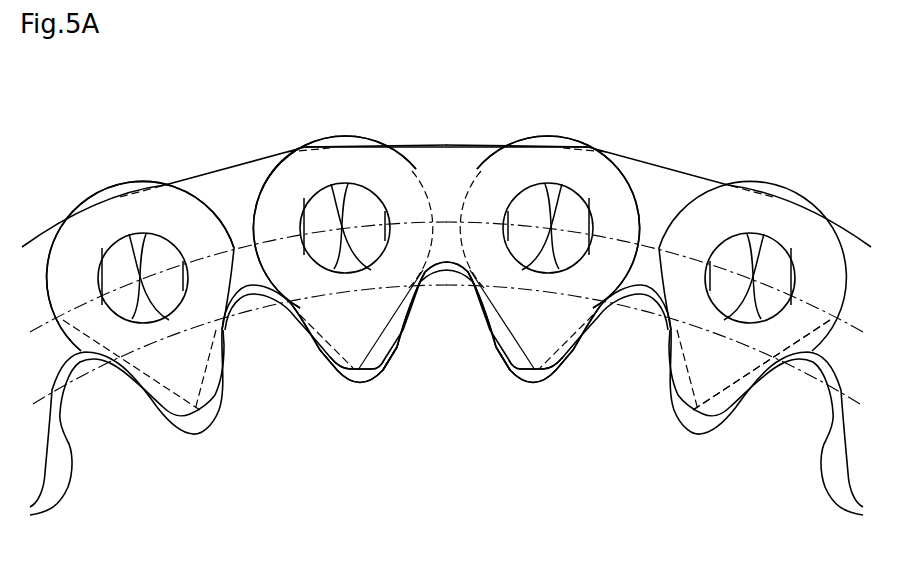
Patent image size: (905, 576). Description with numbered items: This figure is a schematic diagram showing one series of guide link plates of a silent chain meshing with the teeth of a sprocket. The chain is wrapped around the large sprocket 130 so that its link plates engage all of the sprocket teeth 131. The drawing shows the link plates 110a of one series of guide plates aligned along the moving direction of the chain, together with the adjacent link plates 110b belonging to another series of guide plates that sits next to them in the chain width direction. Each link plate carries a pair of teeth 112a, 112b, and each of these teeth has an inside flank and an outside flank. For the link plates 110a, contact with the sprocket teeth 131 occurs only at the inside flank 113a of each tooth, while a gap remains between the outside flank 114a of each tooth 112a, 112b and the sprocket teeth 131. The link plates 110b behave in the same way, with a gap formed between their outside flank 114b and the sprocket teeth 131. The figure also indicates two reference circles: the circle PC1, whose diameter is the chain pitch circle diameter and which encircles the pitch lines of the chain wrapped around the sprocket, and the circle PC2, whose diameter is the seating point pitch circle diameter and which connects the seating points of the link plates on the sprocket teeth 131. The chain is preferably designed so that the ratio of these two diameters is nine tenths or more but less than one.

The large sprocket 130 is at (472, 571).
The sprocket teeth 131 is at (445, 278).
The link plates 110a is at (97, 215).
The link plates 110b is at (237, 175).
The tooth 112a is at (348, 370).
The tooth 112b is at (546, 370).
The inside flank 113a is at (382, 363).
The outside flank 114a is at (312, 350).
The outside flank 114b is at (392, 333).
The circle PC1 is at (288, 204).
The circle PC2 is at (730, 337).